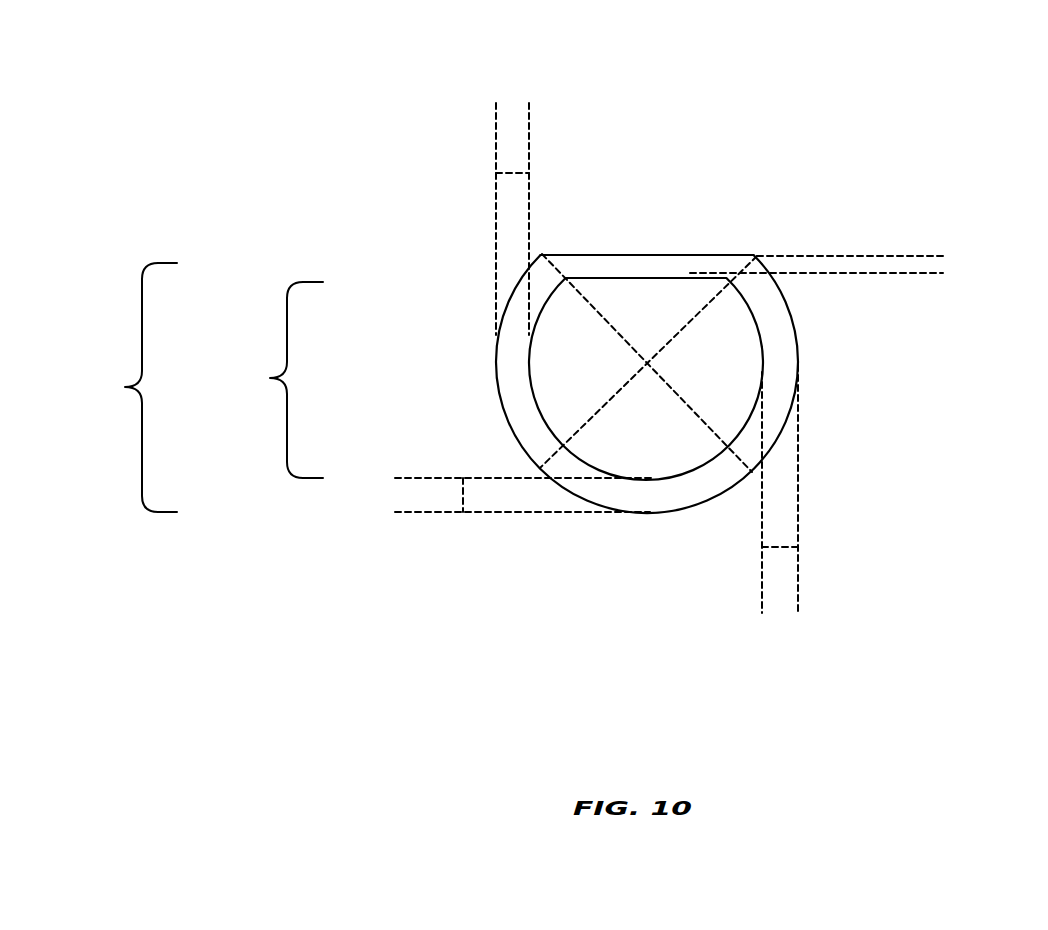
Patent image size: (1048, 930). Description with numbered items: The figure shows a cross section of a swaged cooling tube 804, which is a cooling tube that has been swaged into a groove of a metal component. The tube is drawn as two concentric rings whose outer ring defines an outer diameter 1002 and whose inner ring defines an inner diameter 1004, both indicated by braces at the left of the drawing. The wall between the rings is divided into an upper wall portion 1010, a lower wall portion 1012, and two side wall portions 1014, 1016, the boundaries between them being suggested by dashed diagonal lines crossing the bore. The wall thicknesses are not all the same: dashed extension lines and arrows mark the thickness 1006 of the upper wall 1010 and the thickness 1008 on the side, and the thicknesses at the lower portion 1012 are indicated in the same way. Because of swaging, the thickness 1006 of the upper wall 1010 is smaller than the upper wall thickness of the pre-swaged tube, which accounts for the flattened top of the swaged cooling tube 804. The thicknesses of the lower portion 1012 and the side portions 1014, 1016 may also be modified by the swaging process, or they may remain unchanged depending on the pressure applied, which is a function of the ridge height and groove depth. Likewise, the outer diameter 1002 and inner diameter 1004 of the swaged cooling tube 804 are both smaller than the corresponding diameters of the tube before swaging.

The swaged cooling tube 804 is at (848, 122).
The outer diameter 1002 is at (112, 387).
The inner diameter 1004 is at (258, 380).
The thickness of the upper wall 1006 is at (854, 346).
The wall thickness 1008 is at (433, 180).
The upper wall portion 1010 is at (663, 267).
The lower wall portion 1012 is at (650, 448).
The side wall portion 1014 is at (525, 400).
The side wall portion 1016 is at (783, 358).